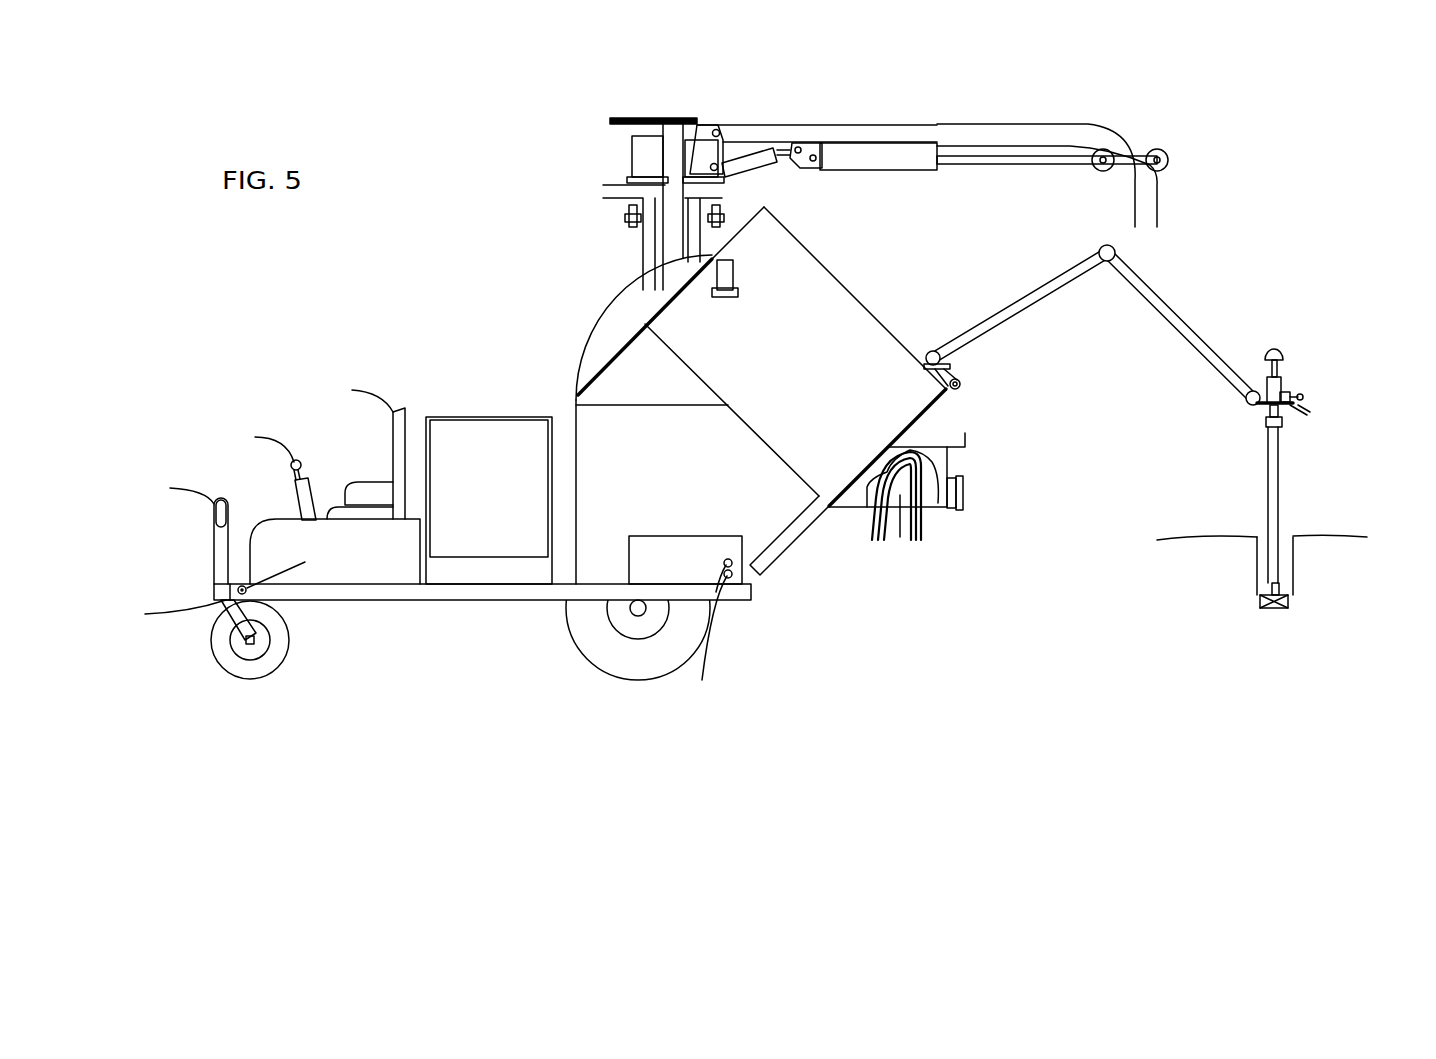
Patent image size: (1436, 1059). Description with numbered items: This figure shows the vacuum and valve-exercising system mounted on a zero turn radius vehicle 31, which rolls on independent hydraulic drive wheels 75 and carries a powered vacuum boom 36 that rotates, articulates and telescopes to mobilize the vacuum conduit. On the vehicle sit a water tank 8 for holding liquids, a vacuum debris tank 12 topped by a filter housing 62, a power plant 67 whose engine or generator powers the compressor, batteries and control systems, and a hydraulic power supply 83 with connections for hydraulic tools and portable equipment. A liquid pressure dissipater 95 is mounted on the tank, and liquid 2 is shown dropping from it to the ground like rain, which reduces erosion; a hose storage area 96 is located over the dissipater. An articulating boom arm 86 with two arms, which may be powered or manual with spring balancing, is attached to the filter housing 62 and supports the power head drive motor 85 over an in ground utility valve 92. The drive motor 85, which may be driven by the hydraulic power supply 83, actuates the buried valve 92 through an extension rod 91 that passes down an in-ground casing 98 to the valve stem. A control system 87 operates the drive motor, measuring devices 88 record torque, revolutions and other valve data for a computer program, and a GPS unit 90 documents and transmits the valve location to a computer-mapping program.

The powered vacuum boom 36 is at (867, 124).
The filter housing 62 is at (826, 292).
The vacuum debris tank 12 is at (795, 449).
The container to hold liquids 8 is at (652, 419).
The power plant 67 is at (495, 500).
The hydraulic power supply 83 is at (716, 624).
The zero turn radius vehicle 31 is at (494, 602).
The independent hydraulic drive wheels 75 is at (632, 608).
The liquid 2 is at (893, 537).
The liquid pressure dissipater 95 is at (975, 535).
The hose storage area 96 is at (943, 430).
The articulating boom arm 86 is at (1142, 294).
The extension rod 91 is at (1268, 432).
The power head drive motor 85 is at (1265, 398).
The GPS 90 is at (1285, 349).
The control system for drive motor 87 is at (1290, 394).
The measuring devices 88 is at (1307, 400).
The valve 92 is at (1260, 594).
The in-ground casing to valve 98 is at (1293, 550).